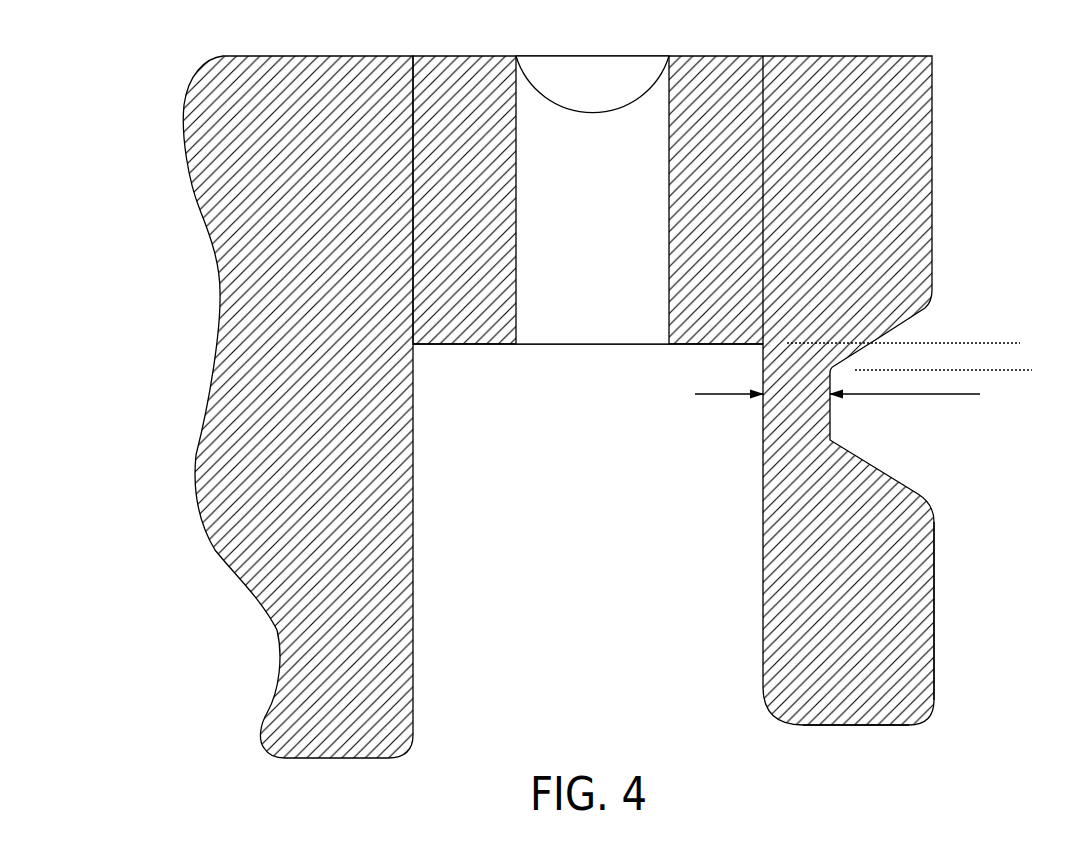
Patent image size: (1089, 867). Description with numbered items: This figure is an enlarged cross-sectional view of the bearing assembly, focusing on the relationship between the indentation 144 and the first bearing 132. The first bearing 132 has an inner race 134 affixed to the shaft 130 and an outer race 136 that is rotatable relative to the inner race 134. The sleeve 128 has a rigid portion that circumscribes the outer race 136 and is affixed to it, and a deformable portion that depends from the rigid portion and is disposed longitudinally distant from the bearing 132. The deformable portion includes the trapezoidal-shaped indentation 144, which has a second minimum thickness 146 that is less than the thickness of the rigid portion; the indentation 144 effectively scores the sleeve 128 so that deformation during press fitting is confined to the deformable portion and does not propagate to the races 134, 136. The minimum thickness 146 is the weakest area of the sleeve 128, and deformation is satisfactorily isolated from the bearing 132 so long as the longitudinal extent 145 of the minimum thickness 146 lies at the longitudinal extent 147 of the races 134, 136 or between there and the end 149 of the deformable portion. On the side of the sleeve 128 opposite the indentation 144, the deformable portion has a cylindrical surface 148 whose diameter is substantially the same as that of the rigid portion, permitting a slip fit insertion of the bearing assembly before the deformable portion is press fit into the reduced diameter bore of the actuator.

The sleeve 128 is at (934, 157).
The shaft 130 is at (415, 605).
The first bearing 132 is at (582, 418).
The inner race 134 is at (450, 345).
The outer race 136 is at (686, 346).
The indentation 144 is at (916, 460).
The longitudinal extent of the minimum thickness 145 is at (997, 380).
The second minimum thickness 146 is at (938, 400).
The longitudinal extent of the races 147 is at (988, 336).
The cylindrical surface 148 is at (935, 652).
The end of the deformable portion 149 is at (858, 727).